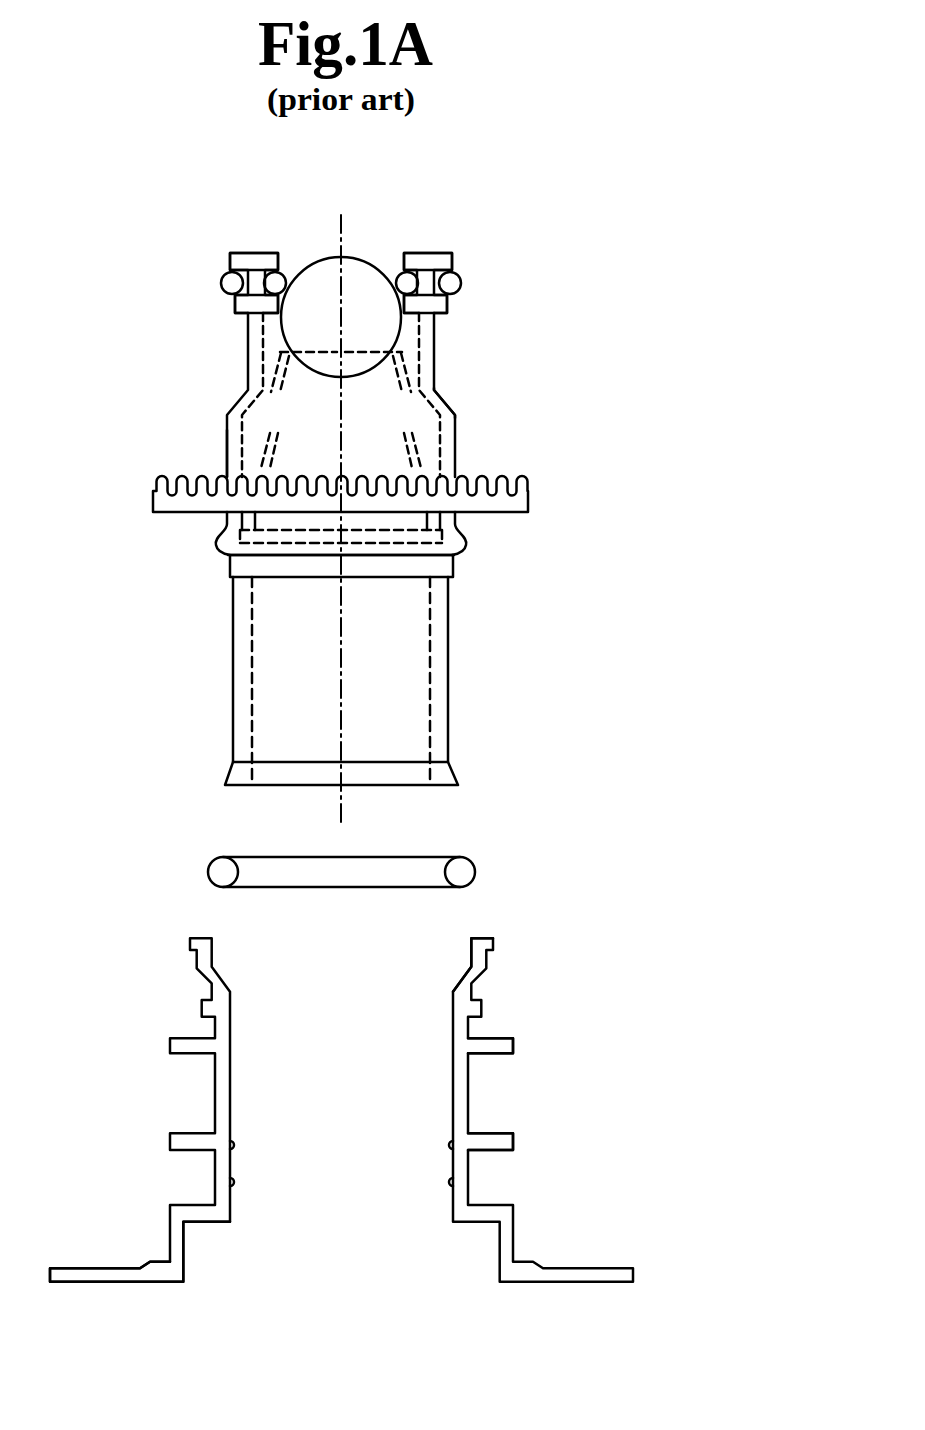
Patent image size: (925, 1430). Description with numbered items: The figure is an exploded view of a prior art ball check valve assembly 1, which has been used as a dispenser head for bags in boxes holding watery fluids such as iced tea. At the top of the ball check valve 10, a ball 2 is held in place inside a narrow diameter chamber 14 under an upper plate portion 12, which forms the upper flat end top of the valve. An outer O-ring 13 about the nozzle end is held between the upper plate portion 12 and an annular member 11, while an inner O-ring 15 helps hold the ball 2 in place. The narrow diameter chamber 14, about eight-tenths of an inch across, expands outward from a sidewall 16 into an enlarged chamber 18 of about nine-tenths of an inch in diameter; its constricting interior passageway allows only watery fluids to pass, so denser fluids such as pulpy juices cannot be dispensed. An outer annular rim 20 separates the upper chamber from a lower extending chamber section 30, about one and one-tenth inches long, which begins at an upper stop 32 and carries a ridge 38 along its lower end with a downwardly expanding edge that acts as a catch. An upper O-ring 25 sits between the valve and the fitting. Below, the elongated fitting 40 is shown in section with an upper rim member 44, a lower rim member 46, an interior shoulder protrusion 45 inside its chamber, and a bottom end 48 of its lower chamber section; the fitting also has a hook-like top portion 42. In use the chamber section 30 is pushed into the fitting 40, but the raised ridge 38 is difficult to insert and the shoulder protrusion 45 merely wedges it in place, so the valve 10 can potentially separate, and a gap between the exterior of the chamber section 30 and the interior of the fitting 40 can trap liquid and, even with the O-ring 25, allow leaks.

The prior art ball check valve assembly 1 is at (545, 245).
The ball 2 is at (350, 277).
The ball check valve 10 is at (140, 298).
The annular member 11 is at (347, 344).
The upper plate portion 12 is at (307, 239).
The outer O-ring 13 is at (284, 316).
The narrow diameter chamber 14 is at (387, 395).
The inner O-ring 15 is at (341, 219).
The sidewall 16 is at (491, 396).
The enlarged chamber 18 is at (243, 443).
The outer annular rim 20 is at (395, 536).
The upper O-ring 25 is at (380, 848).
The lower extending chamber section 30 is at (407, 670).
The upper stop 32 is at (284, 559).
The ridge 38 is at (278, 755).
The elongated fitting 40 is at (613, 1130).
The bracket hook 42 is at (537, 963).
The upper rim member 44 is at (542, 1062).
The interior shoulder protrusion 45 is at (284, 1161).
The lower rim member 46 is at (544, 1164).
The bottom end of lower chamber section 48 is at (185, 1260).